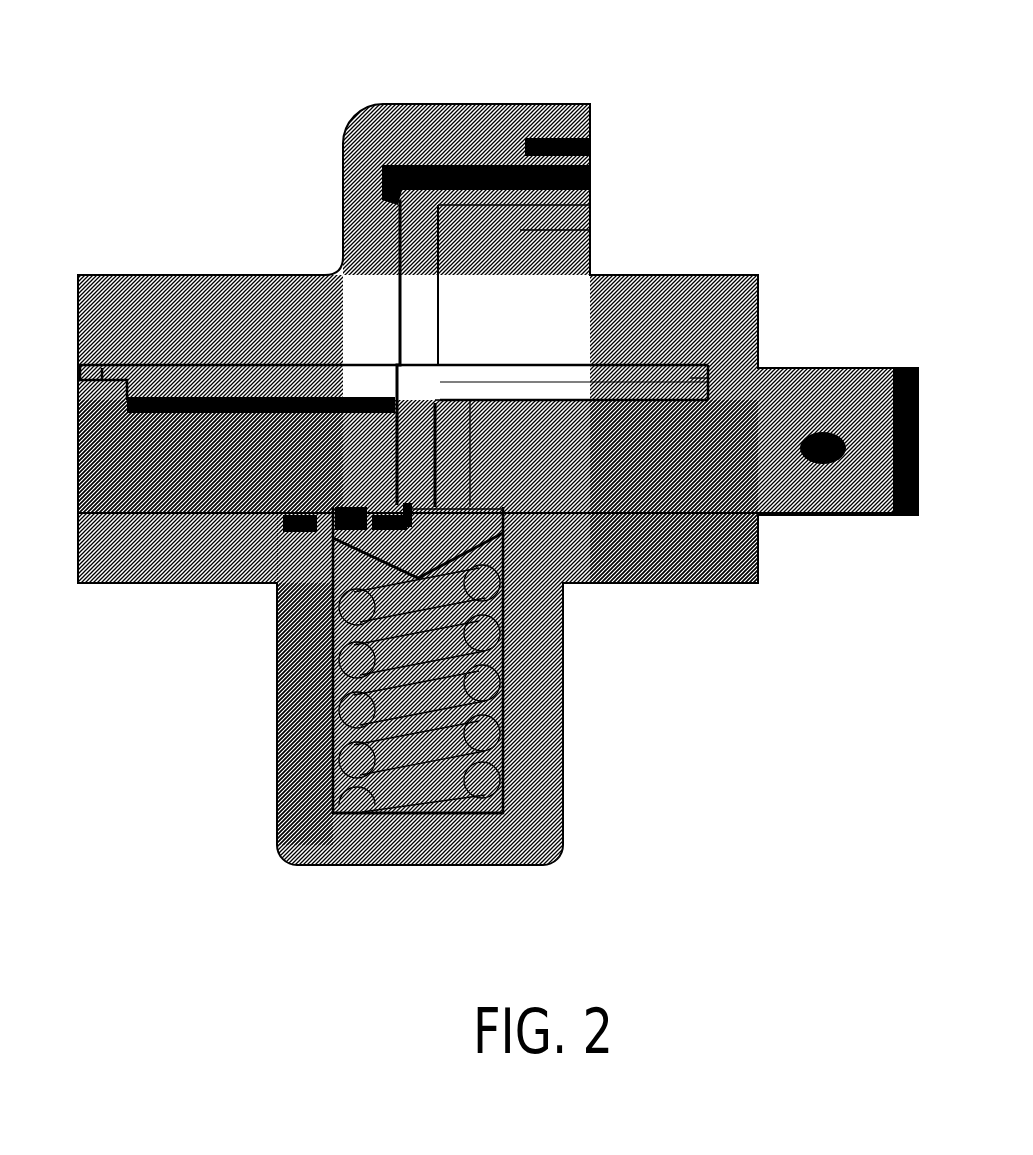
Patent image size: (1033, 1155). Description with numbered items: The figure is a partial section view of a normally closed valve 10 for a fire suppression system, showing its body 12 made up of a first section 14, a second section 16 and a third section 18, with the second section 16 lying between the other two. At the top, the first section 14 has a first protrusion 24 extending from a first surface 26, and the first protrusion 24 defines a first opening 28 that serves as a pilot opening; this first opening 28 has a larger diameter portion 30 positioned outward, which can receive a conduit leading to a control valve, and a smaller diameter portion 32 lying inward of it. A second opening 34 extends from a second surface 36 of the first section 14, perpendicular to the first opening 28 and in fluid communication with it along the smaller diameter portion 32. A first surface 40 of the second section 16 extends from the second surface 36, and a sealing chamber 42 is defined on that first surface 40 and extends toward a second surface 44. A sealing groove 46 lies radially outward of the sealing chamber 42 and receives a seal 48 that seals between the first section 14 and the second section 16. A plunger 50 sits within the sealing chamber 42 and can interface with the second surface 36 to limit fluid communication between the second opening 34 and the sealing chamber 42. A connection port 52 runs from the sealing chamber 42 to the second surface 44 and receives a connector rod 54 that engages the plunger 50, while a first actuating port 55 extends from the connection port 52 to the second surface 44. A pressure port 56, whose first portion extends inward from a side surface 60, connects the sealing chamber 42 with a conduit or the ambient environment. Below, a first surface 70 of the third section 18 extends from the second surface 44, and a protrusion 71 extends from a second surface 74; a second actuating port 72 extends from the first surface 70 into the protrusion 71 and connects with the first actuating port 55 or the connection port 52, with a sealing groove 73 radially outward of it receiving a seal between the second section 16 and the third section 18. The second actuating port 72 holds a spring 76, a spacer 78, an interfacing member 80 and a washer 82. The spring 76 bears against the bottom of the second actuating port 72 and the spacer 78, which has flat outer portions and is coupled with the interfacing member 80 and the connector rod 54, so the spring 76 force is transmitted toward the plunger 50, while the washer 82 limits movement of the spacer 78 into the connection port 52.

The valve 10 is at (795, 92).
The body 12 is at (637, 700).
The first section 14 is at (80, 270).
The second section 16 is at (80, 470).
The third section 18 is at (300, 875).
The first protrusion 24 is at (383, 117).
The first surface 26 is at (735, 272).
The first opening 28 is at (585, 180).
The larger diameter portion 30 is at (562, 138).
The smaller diameter portion 32 is at (488, 165).
The second opening 34 is at (395, 238).
The second surface 36 is at (100, 372).
The first surface 40 is at (886, 368).
The sealing chamber 42 is at (215, 408).
The second surface 44 is at (880, 515).
The sealing groove 46 is at (725, 378).
The seal 48 is at (238, 365).
The plunger 50 is at (640, 385).
The connection port 52 is at (445, 440).
The connector rod 54 is at (422, 430).
The first actuating port 55 is at (505, 513).
The pressure port 56 is at (822, 462).
The side surface 60 is at (910, 430).
The first surface 70 is at (92, 518).
The protrusion 71 is at (277, 705).
The second actuating port 72 is at (427, 800).
The sealing groove 73 is at (540, 515).
The second surface 74 is at (98, 585).
The spring 76 is at (505, 740).
The spacer 78 is at (333, 545).
The interfacing member 80 is at (492, 540).
The washer 82 is at (318, 530).